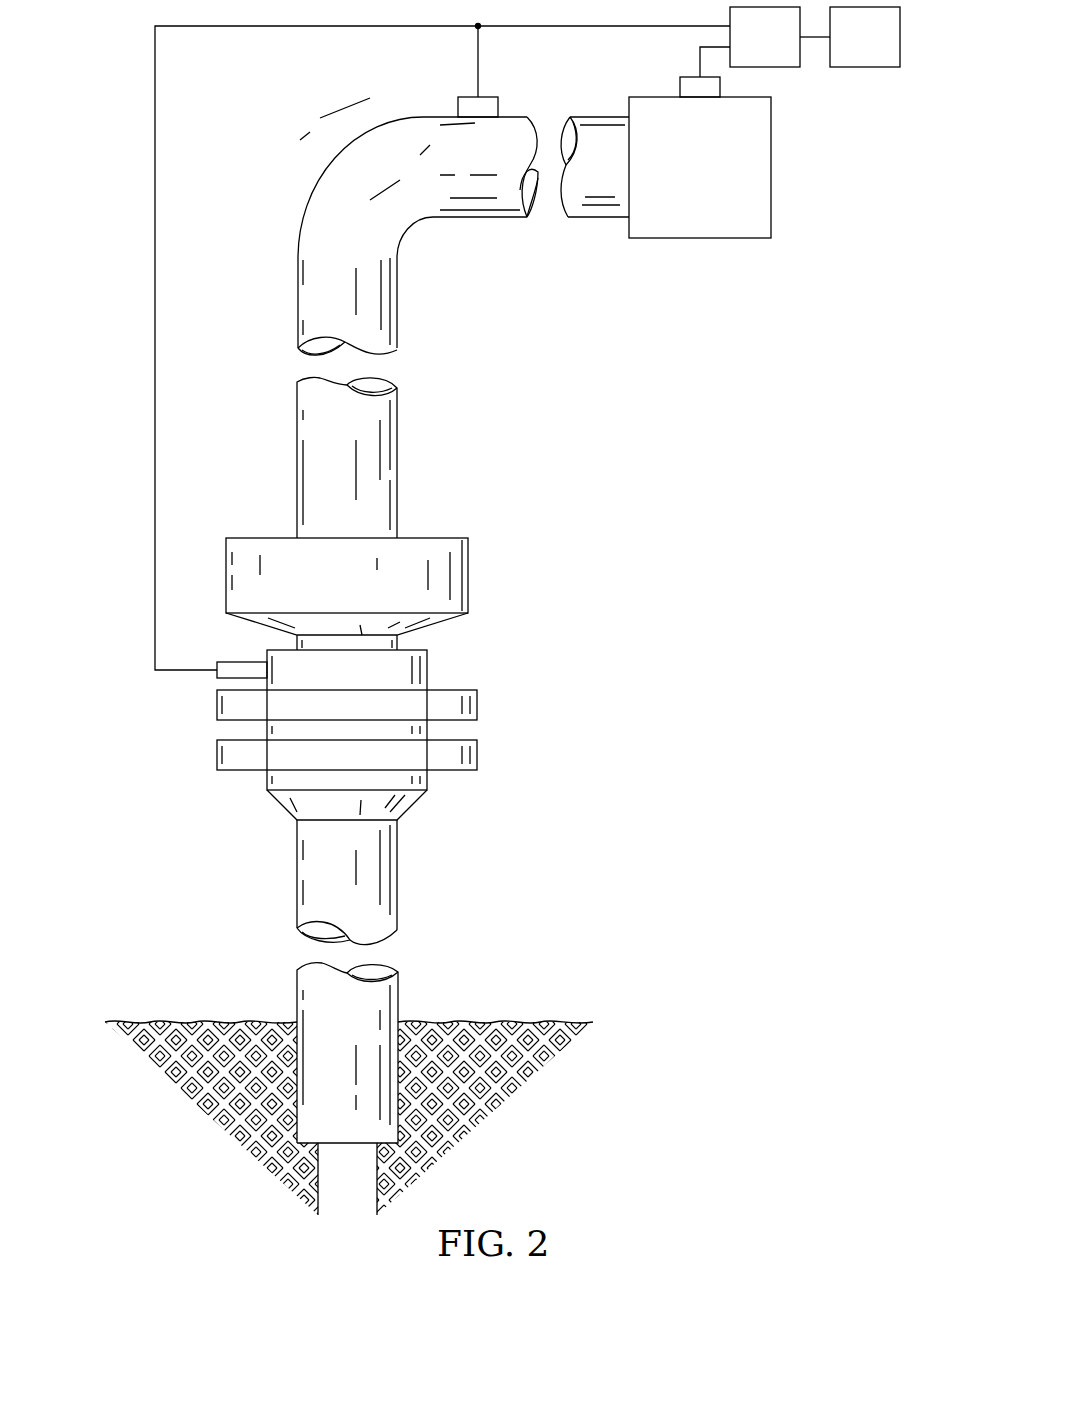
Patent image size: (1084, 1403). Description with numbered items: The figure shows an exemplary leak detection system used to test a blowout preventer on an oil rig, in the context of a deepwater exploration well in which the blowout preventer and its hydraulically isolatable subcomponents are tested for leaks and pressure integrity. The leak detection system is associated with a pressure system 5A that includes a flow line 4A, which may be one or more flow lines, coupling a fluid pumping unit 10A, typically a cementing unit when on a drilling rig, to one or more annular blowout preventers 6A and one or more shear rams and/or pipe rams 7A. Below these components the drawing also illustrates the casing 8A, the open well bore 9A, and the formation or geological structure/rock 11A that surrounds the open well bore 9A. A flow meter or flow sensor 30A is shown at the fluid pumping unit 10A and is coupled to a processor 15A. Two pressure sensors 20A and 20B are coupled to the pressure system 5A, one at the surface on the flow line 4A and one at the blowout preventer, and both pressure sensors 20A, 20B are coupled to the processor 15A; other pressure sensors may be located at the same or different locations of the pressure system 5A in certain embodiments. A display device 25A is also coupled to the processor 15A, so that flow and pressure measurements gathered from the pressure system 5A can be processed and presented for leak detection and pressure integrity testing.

The flow line 4A is at (297, 462).
The pressure system 5A is at (618, 618).
The annular blowout preventer 6A is at (468, 580).
The shear rams and/or pipe rams 7A is at (427, 728).
The casing 8A is at (297, 875).
The open well bore 9A is at (348, 1157).
The fluid pumping unit 10A is at (720, 180).
The formation or geological structure/rock 11A is at (520, 1022).
The processor 15A is at (786, 50).
The pressure sensor 20A is at (458, 105).
The pressure sensor 20B is at (240, 662).
The display device 25A is at (886, 50).
The flow meter or flow sensor 30A is at (680, 86).